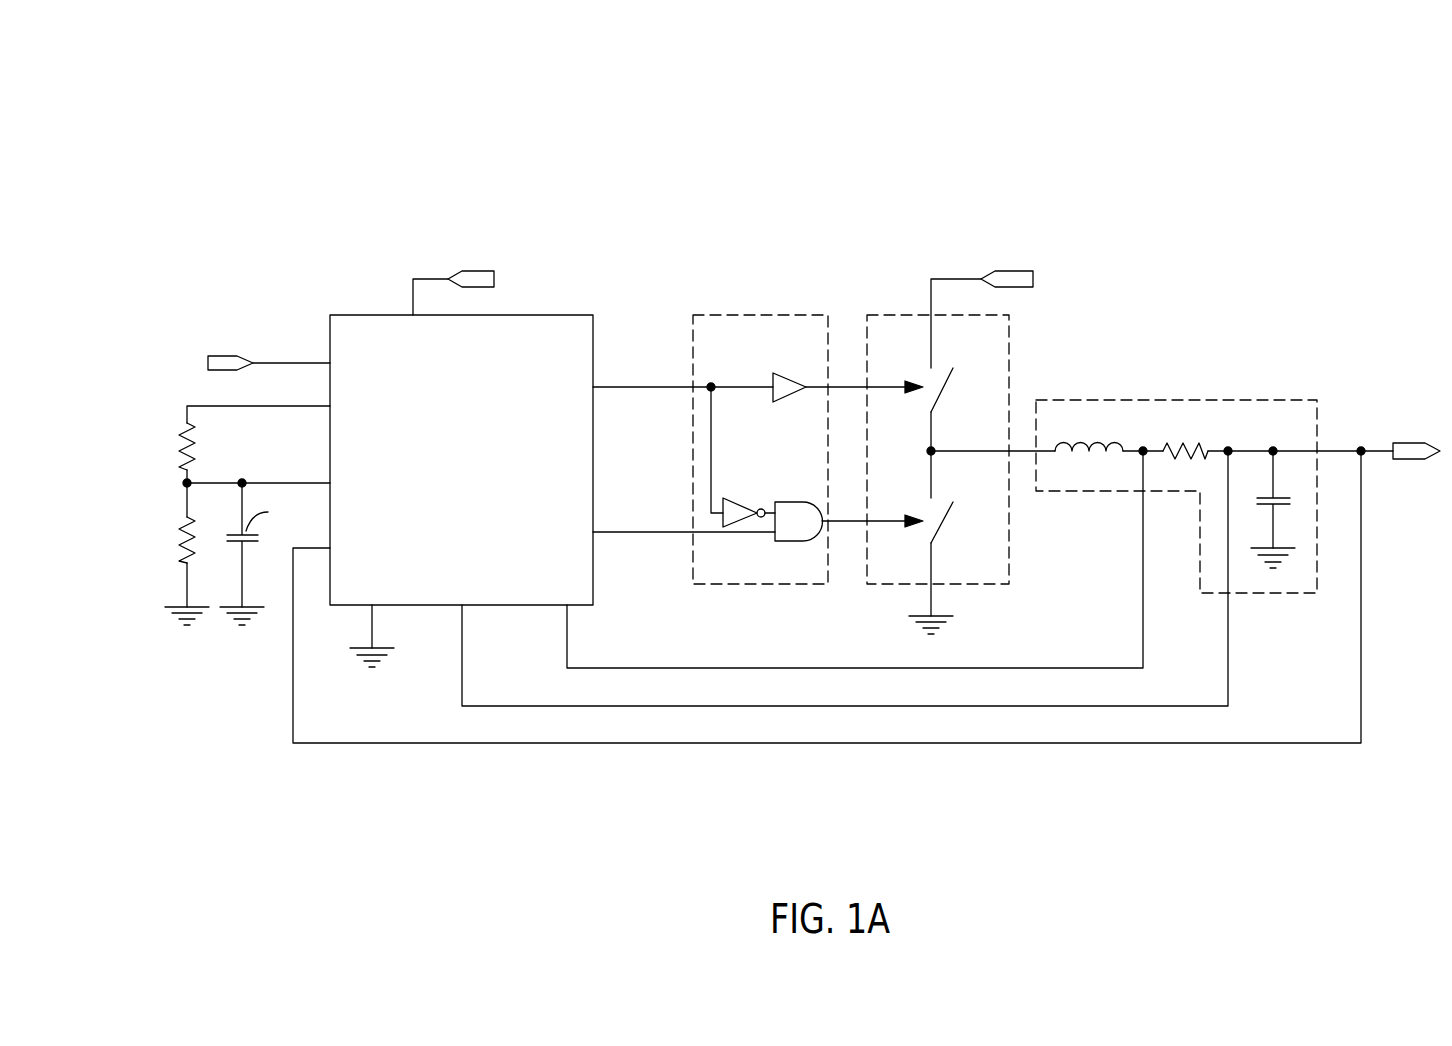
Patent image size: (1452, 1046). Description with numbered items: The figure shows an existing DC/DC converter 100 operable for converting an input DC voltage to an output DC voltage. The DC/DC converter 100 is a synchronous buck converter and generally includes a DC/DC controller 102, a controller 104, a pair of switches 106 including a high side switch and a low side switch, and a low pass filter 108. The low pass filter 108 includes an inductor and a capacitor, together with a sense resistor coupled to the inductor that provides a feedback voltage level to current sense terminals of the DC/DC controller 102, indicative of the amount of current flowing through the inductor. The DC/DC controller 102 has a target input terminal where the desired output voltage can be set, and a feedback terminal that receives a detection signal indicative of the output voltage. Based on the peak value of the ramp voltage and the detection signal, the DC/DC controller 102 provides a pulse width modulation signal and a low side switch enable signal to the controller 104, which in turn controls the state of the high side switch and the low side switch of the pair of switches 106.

The DC/DC converter 100 is at (258, 176).
The DC/DC controller 102 is at (557, 315).
The controller 104 is at (753, 315).
The pair of switches 106 is at (1009, 360).
The low pass filter 108 is at (1230, 400).